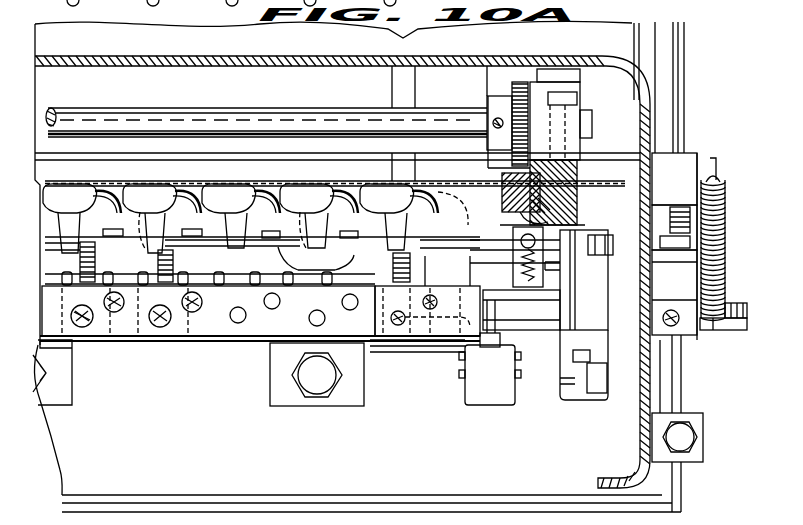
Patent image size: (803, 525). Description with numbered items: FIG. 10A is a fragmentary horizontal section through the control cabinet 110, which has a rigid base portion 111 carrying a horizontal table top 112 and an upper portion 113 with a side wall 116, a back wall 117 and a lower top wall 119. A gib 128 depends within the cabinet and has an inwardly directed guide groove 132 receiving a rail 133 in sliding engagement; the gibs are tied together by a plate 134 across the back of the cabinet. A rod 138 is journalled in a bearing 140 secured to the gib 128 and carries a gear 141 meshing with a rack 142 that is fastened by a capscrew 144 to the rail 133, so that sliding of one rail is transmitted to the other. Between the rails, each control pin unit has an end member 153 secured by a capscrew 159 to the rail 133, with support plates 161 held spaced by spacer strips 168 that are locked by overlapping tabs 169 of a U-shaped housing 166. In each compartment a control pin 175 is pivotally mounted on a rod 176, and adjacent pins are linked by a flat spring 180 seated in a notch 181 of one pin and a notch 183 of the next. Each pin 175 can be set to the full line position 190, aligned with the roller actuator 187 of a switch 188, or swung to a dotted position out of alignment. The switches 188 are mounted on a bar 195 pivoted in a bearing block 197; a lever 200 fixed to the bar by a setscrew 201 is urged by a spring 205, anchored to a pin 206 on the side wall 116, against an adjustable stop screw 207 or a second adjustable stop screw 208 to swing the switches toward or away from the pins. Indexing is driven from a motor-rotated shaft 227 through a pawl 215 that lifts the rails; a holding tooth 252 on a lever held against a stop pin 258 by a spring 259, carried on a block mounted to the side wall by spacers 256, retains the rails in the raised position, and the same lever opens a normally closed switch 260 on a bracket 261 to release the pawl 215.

The rigid base portion 111 is at (687, 60).
The upper portion 113 is at (658, 90).
The side wall 116 is at (655, 104).
The back wall 117 is at (306, 70).
The lower top wall 119 is at (203, 55).
The rod 138 is at (210, 110).
The plate 134 is at (42, 133).
The gear 141 is at (510, 88).
The bearing 140 is at (577, 103).
The end member 153 is at (485, 163).
The rack 142 is at (505, 158).
The rail 133 is at (500, 173).
The guide groove 132 is at (578, 173).
The gib 128 is at (577, 186).
The capscrew 144 is at (548, 213).
The rod 176 is at (91, 182).
The spacer strip 168 is at (118, 186).
The U-shaped housing 166 is at (190, 184).
The notch 181 is at (319, 106).
The notch 183 is at (385, 183).
The flat spring 180 is at (130, 214).
The full line position 190 is at (228, 246).
The control pin 175 is at (173, 250).
The support plate 161 is at (280, 244).
The overlapping tab 169 is at (316, 264).
The roller actuator 187 is at (92, 261).
The shaft 227 is at (208, 279).
The bar 195 is at (322, 306).
The switch 188 is at (150, 340).
The table top 112 is at (138, 379).
The capscrew 159 is at (458, 214).
The pawl 215 is at (462, 254).
The stop pin 258 is at (490, 254).
The spacer 256 is at (575, 253).
The spring 259 is at (545, 270).
The holding tooth 252 is at (490, 292).
The pin 206 is at (719, 174).
The second adjustable stop screw 208 is at (700, 224).
The spring 205 is at (722, 253).
The setscrew 201 is at (676, 305).
The lever 200 is at (413, 428).
The control cabinet 110 is at (688, 388).
The bearing block 197 is at (582, 364).
The adjustable stop screw 207 is at (690, 428).
The bracket 261 is at (518, 403).
The switch 260 is at (479, 398).